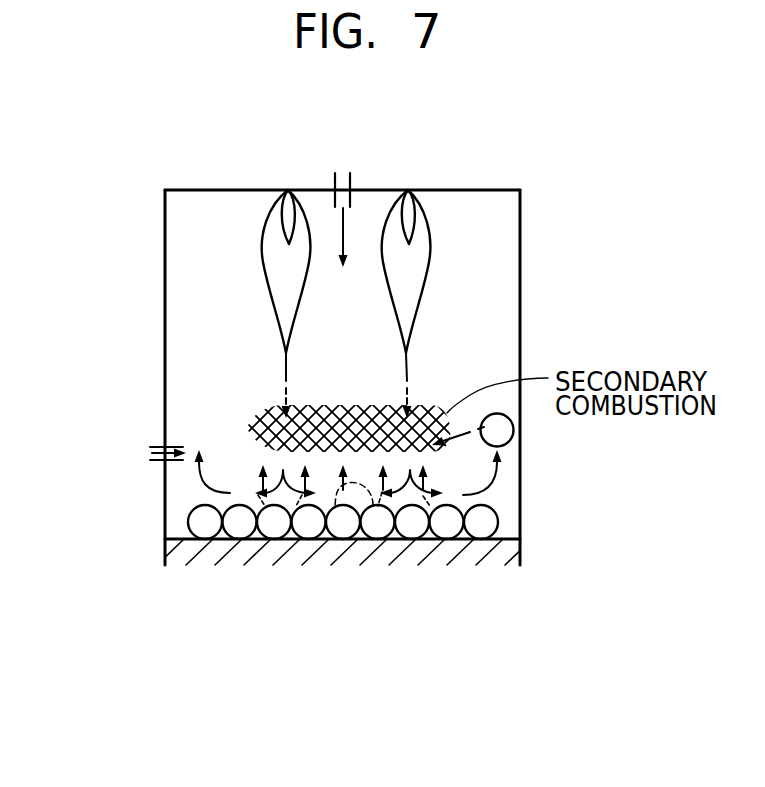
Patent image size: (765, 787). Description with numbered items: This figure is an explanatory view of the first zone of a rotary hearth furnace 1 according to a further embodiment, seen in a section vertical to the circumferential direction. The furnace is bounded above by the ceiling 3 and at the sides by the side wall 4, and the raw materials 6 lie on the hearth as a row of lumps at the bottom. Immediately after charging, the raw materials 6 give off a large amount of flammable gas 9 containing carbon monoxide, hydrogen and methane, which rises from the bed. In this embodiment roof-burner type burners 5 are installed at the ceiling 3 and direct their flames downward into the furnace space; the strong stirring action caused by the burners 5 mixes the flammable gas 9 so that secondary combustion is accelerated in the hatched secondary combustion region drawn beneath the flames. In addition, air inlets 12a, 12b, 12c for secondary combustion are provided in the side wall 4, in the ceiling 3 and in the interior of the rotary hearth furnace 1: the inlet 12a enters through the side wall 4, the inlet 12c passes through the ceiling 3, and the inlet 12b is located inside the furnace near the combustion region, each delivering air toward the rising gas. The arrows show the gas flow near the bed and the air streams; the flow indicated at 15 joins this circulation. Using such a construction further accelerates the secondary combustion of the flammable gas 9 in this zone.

The rotary hearth furnace 1 is at (552, 174).
The ceiling 3 is at (207, 190).
The side wall 4 is at (165, 212).
The burner 5 is at (285, 263).
The raw materials 6 is at (305, 528).
The flammable gas 9 is at (373, 505).
The air inlet 12a is at (150, 453).
The air inlet 12b is at (502, 435).
The air inlet 12c is at (342, 173).
The primary air flow 15 is at (205, 482).